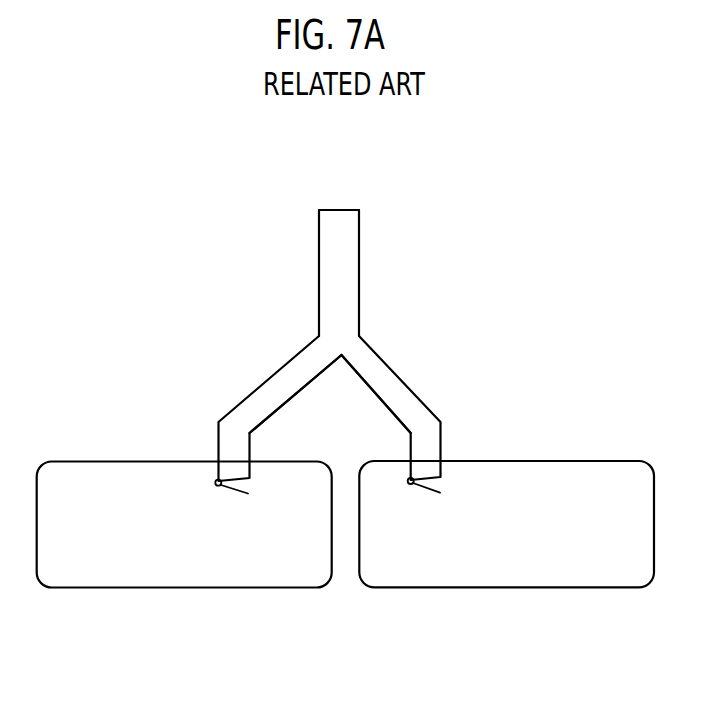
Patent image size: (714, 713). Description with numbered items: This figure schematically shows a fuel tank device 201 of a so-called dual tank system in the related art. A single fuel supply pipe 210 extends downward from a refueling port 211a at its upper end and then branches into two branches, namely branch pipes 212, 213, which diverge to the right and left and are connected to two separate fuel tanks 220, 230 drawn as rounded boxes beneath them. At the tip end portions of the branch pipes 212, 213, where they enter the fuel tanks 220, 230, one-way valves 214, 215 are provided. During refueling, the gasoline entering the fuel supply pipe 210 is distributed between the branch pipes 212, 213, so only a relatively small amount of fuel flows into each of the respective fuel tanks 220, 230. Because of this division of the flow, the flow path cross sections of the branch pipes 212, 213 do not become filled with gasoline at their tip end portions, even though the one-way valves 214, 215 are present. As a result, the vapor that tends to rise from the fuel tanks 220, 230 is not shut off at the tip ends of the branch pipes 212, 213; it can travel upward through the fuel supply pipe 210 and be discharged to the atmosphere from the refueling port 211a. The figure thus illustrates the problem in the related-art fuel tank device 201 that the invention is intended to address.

The fuel tank device 201 is at (383, 211).
The fuel supply pipe 210 is at (385, 340).
The refueling port 211a is at (345, 210).
The branch pipe 212 is at (420, 398).
The branch pipe 213 is at (265, 390).
The one-way valve 214 is at (427, 490).
The one-way valve 215 is at (235, 490).
The fuel tank 220 is at (555, 461).
The fuel tank 230 is at (127, 461).